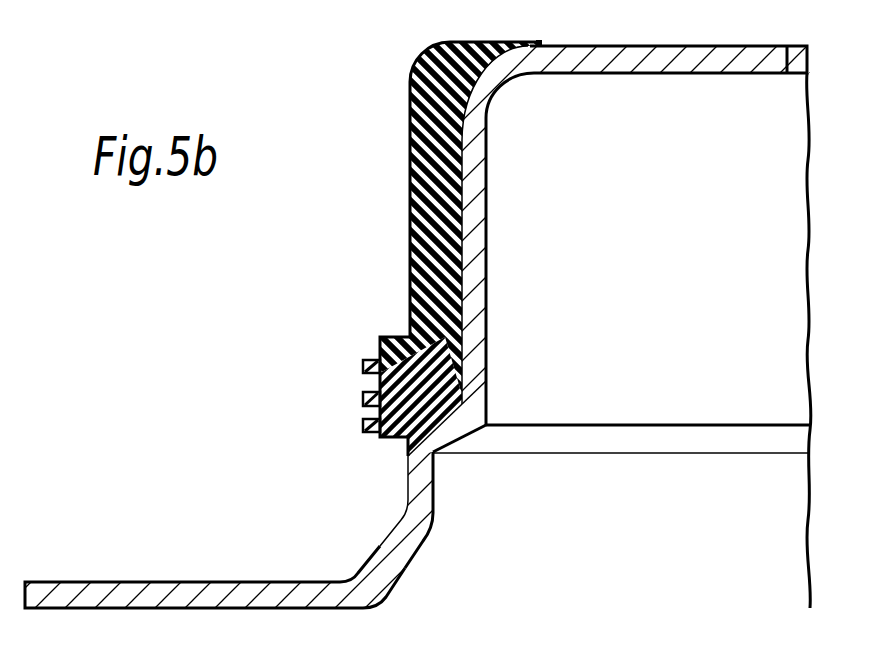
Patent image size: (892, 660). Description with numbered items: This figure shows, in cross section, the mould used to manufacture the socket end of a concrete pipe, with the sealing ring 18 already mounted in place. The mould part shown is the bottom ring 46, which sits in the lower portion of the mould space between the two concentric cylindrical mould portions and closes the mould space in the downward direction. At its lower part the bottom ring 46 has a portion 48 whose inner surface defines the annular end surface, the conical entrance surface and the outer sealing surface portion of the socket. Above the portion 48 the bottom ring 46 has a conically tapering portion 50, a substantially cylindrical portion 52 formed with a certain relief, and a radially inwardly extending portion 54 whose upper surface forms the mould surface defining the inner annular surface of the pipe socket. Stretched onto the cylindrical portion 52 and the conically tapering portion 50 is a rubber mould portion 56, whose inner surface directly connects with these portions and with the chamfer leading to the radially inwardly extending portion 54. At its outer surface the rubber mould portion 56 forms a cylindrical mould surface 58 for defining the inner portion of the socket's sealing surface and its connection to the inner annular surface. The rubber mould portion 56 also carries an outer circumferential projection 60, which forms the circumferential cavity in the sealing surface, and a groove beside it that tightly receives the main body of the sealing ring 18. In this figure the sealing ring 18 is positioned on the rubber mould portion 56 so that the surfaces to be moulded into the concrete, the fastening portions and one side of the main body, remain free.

The sealing ring 18 is at (397, 418).
The bottom ring 46 is at (487, 342).
The portion of the bottom ring 48 is at (362, 592).
The conically tapering portion 50 is at (450, 433).
The substantially cylindrical portion 52 is at (478, 178).
The radially inwardly extending portion 54 is at (680, 64).
The rubber mould portion 56 is at (427, 170).
The cylindrical mould surface 58 is at (410, 111).
The outer circumferential projection 60 is at (380, 342).